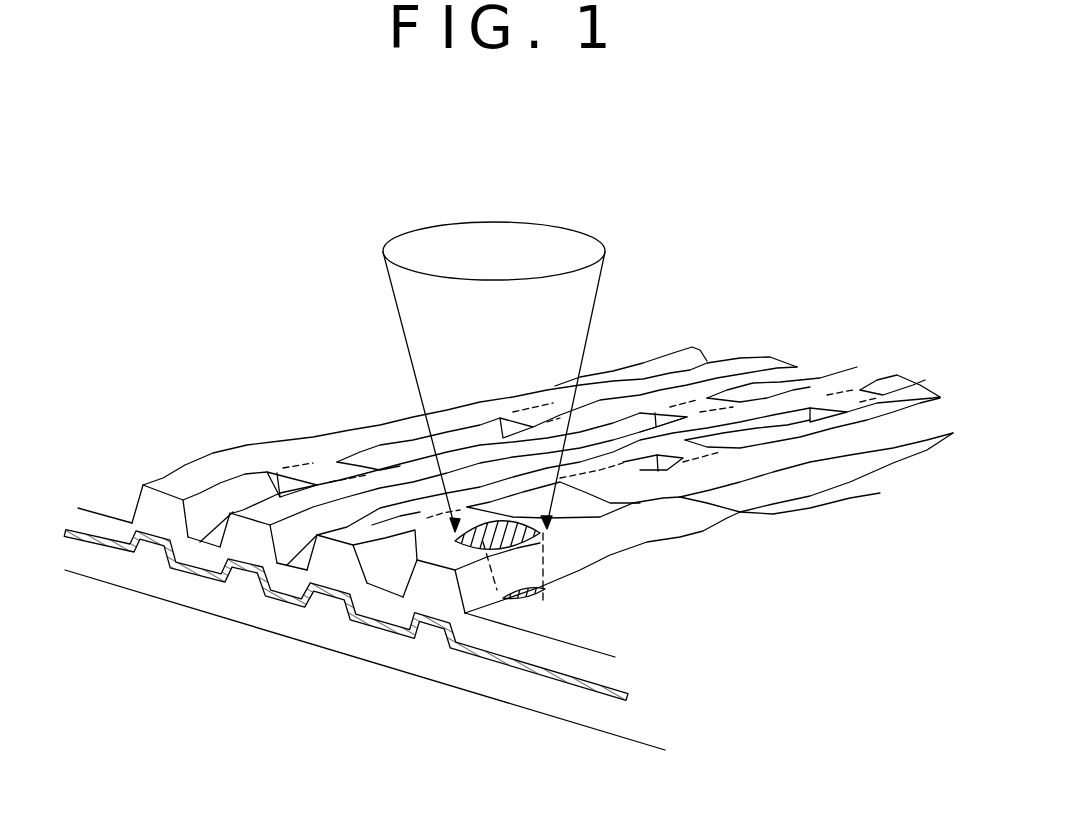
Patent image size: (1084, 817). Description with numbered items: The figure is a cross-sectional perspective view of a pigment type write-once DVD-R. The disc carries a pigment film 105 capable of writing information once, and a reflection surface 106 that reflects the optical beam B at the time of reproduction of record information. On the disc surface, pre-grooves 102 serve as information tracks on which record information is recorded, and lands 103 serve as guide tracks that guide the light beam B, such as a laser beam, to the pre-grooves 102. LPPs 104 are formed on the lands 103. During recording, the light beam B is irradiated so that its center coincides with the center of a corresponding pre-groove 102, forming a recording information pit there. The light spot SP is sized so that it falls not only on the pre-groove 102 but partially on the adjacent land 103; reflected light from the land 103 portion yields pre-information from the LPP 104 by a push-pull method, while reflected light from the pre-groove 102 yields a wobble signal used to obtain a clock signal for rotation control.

The pre-groove 102 is at (263, 507).
The land 103 is at (212, 538).
The LPP 104 is at (323, 467).
The pigment film 105 is at (606, 656).
The reflection surface 106 is at (543, 673).
The light beam B is at (597, 287).
The light spot SP is at (545, 563).